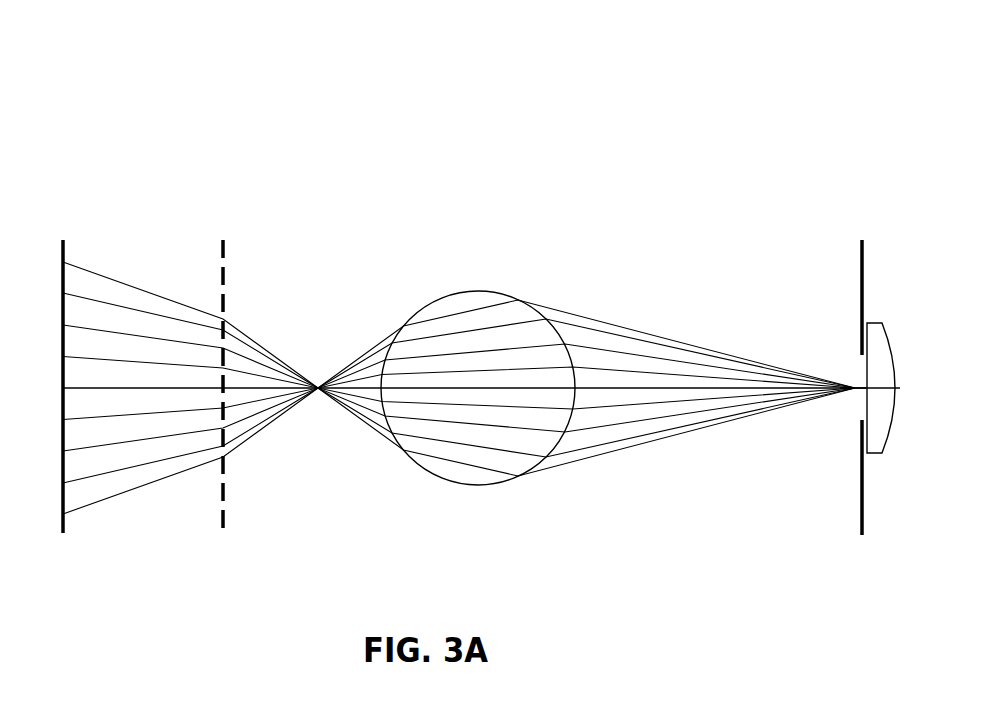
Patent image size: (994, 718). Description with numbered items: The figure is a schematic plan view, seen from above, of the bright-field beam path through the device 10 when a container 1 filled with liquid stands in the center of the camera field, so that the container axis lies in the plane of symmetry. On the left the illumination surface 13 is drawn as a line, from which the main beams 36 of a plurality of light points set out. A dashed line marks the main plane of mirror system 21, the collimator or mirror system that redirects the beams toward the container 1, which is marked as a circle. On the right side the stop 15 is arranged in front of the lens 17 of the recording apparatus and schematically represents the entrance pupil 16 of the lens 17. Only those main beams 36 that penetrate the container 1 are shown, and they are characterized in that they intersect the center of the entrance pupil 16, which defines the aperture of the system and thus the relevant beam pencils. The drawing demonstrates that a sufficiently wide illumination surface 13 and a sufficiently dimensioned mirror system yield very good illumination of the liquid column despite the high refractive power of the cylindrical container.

The device 10 is at (148, 61).
The illumination surface 13 is at (65, 523).
The main plane of mirror system 21 is at (223, 502).
The main beams 36 is at (79, 264).
The container 1 is at (465, 290).
The stop 15 is at (858, 253).
The entrance pupil 16 is at (848, 407).
The lens 17 is at (877, 452).